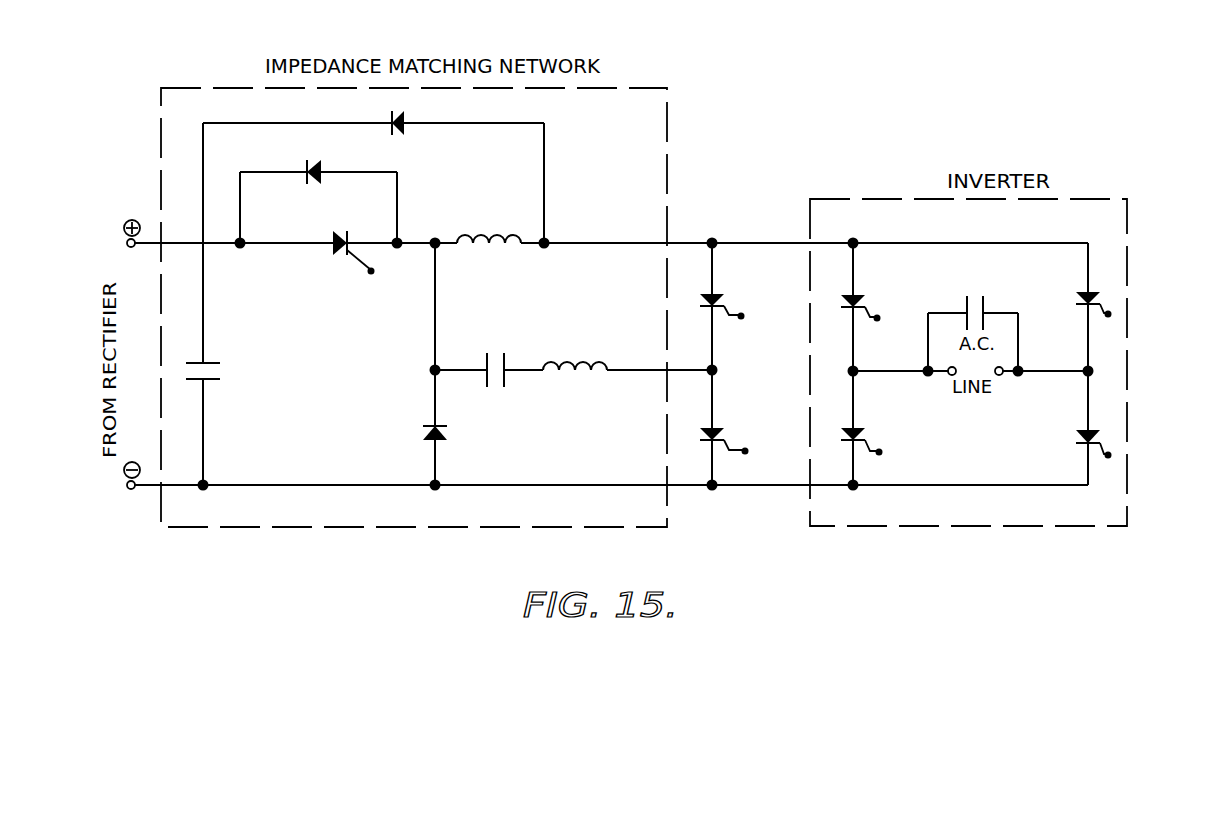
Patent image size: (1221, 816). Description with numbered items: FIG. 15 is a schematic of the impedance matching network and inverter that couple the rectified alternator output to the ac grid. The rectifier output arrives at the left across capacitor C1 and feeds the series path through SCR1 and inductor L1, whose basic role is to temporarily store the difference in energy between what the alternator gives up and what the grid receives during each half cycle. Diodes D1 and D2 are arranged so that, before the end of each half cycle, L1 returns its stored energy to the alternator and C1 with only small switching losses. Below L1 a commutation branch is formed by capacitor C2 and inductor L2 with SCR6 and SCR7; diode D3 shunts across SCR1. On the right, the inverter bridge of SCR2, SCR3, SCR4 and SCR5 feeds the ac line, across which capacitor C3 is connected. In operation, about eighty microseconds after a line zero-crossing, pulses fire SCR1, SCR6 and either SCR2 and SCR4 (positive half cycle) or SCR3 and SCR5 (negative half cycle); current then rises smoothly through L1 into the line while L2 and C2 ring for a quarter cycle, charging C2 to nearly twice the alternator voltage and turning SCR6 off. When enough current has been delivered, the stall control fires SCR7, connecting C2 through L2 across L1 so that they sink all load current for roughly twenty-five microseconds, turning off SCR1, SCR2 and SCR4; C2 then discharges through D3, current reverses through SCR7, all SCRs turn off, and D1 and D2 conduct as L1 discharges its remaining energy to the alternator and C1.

The capacitor C1 is at (218, 370).
The capacitor C2 is at (497, 380).
The capacitor C3 is at (972, 302).
The diode D1 is at (450, 433).
The diode D2 is at (400, 113).
The diode D3 is at (315, 189).
The inductor L1 is at (489, 227).
The inductor L2 is at (575, 379).
The silicon controlled rectifier SCR1 is at (374, 264).
The silicon controlled rectifier SCR2 is at (888, 307).
The silicon controlled rectifier SCR3 is at (1122, 293).
The silicon controlled rectifier SCR4 is at (1120, 433).
The silicon controlled rectifier SCR5 is at (888, 443).
The silicon controlled rectifier SCR6 is at (750, 441).
The silicon controlled rectifier SCR7 is at (753, 306).